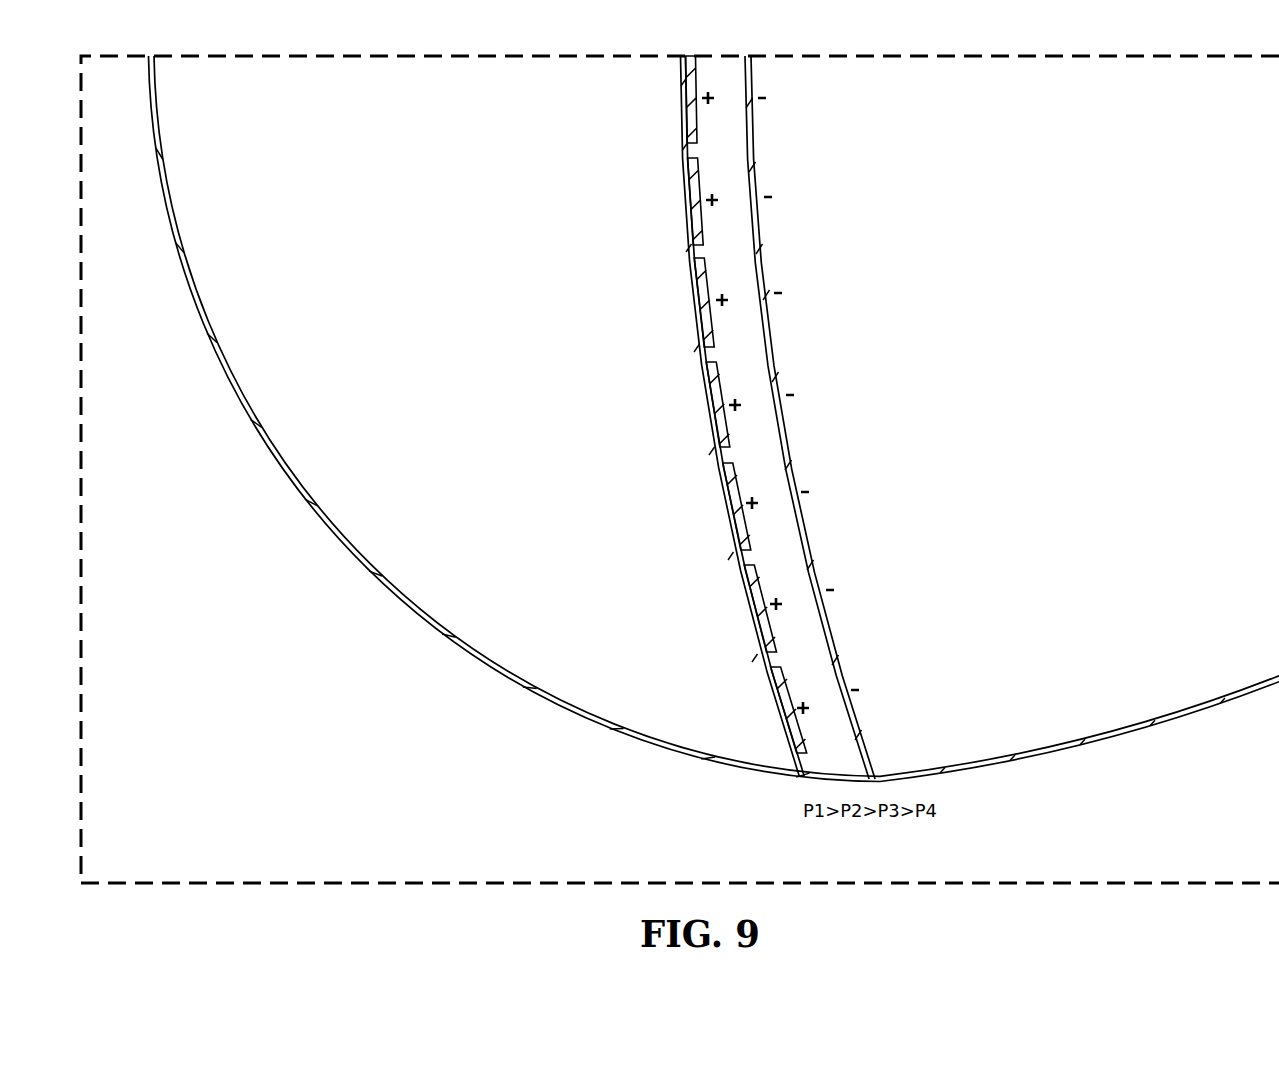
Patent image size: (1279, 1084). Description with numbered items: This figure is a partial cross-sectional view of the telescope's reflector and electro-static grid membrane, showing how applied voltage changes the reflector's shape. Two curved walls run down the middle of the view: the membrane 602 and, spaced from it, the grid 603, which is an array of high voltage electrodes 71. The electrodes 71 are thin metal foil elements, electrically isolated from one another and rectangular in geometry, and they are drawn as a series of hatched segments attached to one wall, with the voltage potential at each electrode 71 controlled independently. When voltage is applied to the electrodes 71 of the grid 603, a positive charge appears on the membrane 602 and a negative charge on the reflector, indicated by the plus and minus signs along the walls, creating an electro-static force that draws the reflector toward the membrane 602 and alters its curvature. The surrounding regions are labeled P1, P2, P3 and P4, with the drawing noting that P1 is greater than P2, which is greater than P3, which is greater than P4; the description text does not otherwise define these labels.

The grid 603 is at (701, 358).
The membrane 602 is at (784, 426).
The high voltage electrodes 71 is at (736, 493).
The pressure region P1 is at (1064, 307).
The pressure region P2 is at (743, 362).
The pressure region P3 is at (456, 307).
The pressure region P4 is at (290, 719).